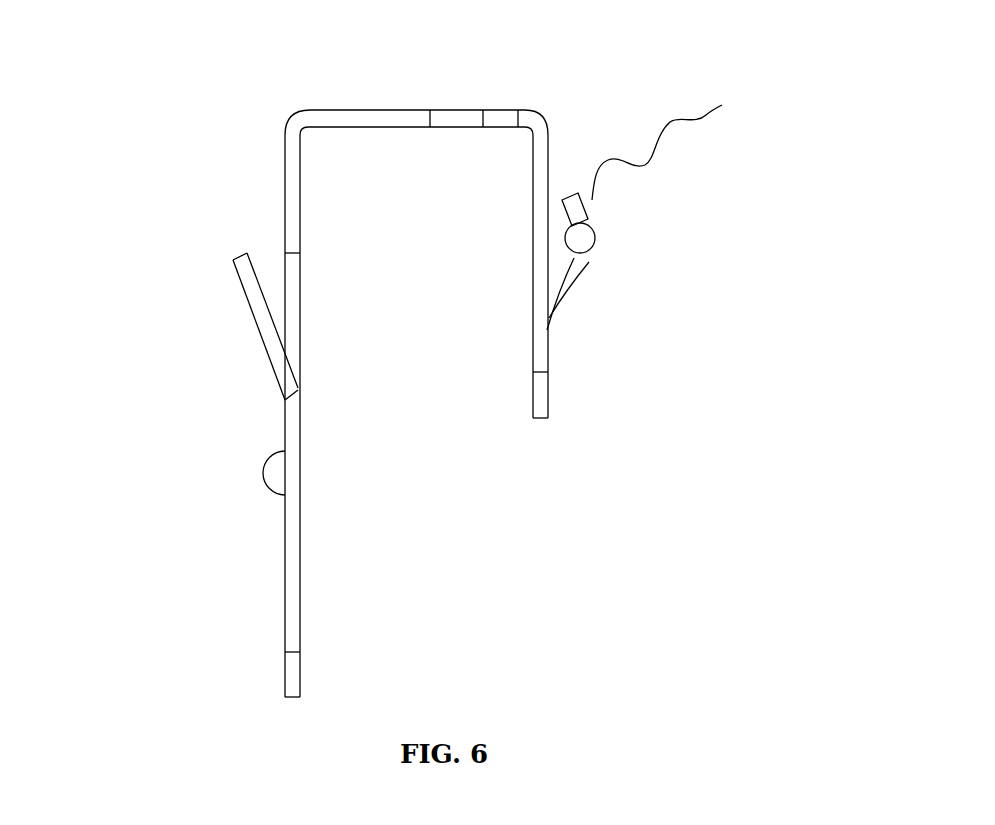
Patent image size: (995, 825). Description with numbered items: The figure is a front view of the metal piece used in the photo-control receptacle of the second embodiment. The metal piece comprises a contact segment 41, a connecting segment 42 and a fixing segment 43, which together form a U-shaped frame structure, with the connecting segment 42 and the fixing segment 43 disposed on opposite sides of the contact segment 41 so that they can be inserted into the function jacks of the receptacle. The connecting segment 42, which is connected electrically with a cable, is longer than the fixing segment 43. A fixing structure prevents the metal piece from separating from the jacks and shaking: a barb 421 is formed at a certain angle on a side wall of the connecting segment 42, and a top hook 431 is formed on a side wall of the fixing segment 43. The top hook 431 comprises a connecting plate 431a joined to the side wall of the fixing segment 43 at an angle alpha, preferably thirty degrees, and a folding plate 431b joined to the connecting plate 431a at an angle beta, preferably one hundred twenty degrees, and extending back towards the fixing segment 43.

The contact segment 41 is at (337, 117).
The connecting segment 42 is at (293, 592).
The barb 421 is at (250, 305).
The fixing segment 43 is at (540, 360).
The top hook 431 is at (700, 141).
The connecting plate 431a is at (582, 215).
The folding plate 431b is at (572, 277).